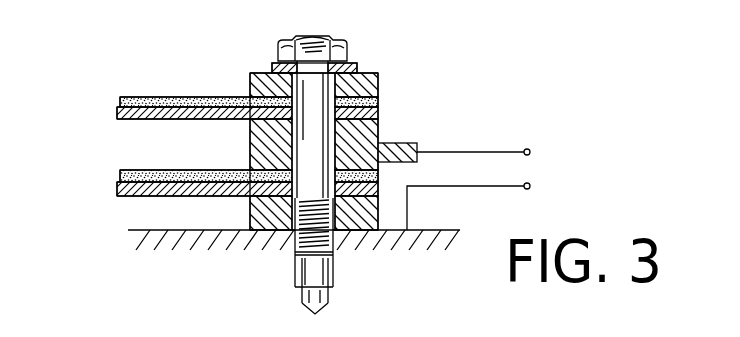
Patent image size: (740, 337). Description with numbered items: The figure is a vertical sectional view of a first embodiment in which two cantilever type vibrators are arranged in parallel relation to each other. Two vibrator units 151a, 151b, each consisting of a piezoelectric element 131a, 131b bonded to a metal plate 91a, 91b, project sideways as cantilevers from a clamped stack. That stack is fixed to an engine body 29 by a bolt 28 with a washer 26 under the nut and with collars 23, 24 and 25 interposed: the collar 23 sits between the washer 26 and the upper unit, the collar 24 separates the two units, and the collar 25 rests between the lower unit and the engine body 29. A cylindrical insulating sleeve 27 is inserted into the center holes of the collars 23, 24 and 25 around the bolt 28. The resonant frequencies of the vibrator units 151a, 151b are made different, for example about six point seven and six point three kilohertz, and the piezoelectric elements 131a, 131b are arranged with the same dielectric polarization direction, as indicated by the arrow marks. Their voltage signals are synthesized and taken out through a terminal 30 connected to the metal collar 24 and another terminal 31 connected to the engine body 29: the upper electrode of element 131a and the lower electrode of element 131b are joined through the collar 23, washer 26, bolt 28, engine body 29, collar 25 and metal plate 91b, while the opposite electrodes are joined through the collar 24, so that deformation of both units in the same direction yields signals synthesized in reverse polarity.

The collar 23 is at (380, 77).
The collar 24 is at (387, 150).
The collar 25 is at (358, 222).
The washer 26 is at (357, 64).
The cylindrical insulating sleeve 27 is at (337, 130).
The bolt 28 is at (278, 43).
The engine body 29 is at (265, 258).
The terminal 30 is at (489, 152).
The terminal 31 is at (484, 203).
The piezoelectric element 131a is at (132, 97).
The metal plate 91a is at (205, 120).
The vibrator unit 151a is at (107, 110).
The piezoelectric element 131b is at (130, 170).
The metal plate 91b is at (138, 192).
The vibrator unit 151b is at (110, 188).